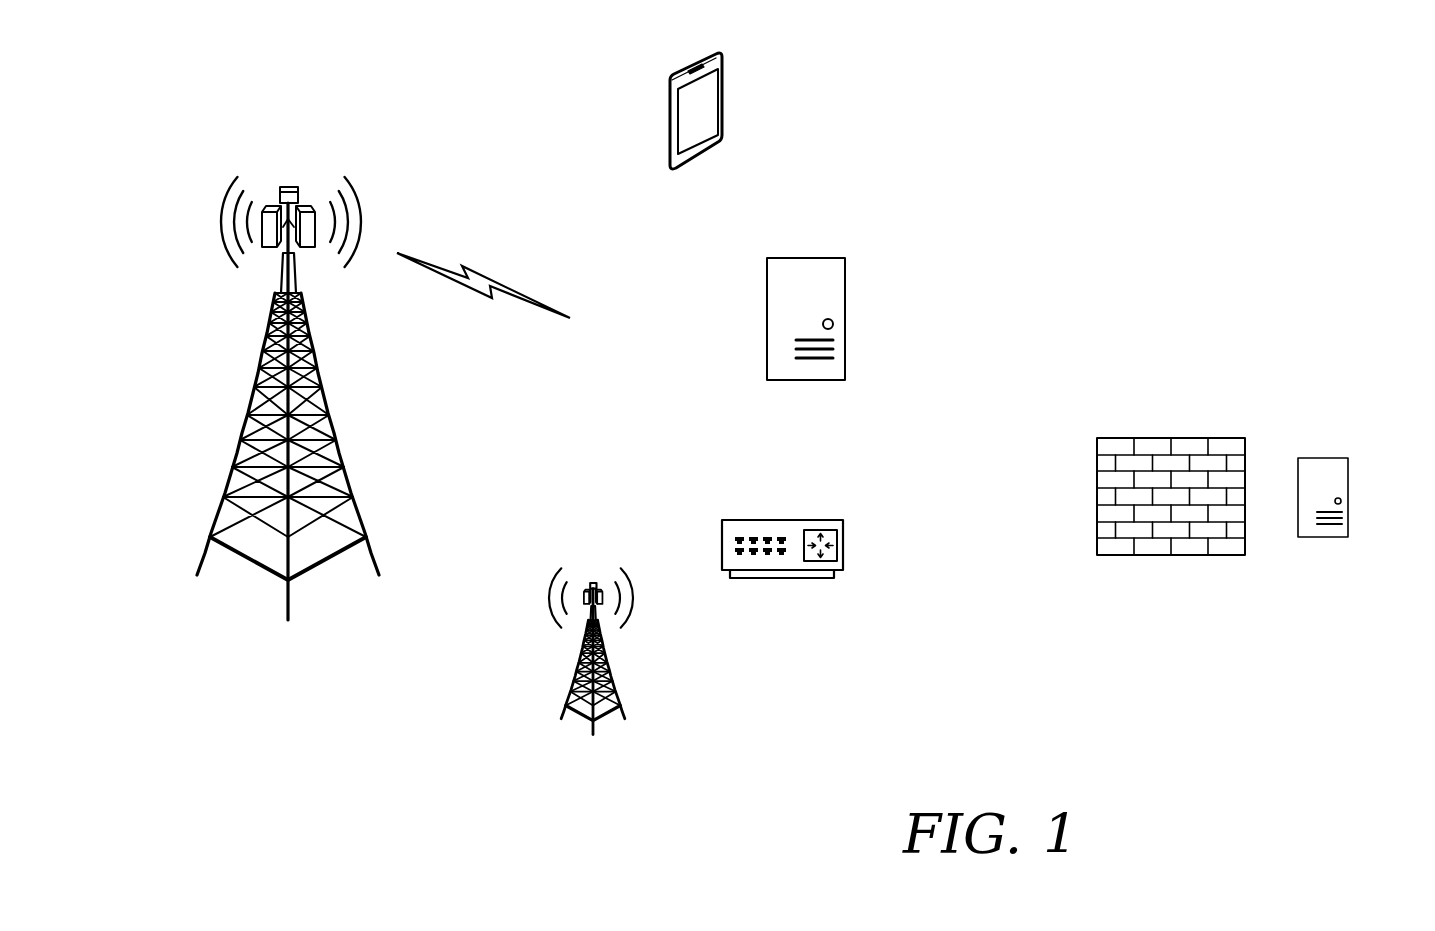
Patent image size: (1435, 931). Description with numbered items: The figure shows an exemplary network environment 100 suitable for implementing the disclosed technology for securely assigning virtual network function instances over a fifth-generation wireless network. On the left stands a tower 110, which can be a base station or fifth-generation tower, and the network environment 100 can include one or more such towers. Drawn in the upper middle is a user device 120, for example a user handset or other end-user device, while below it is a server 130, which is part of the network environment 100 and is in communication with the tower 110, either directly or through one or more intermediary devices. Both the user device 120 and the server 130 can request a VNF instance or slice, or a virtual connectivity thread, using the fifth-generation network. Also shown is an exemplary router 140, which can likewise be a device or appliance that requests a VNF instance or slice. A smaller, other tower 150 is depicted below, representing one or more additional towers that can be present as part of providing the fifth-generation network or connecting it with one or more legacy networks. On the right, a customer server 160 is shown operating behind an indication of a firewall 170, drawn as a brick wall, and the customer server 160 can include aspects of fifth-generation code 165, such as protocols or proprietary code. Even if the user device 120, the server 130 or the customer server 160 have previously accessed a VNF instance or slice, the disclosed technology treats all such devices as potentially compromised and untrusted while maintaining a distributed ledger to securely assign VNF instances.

The network environment 100 is at (140, 130).
The tower 110 is at (336, 445).
The user device 120 is at (716, 52).
The server 130 is at (813, 258).
The router 140 is at (796, 522).
The other tower 150 is at (607, 672).
The customer server 160 is at (1340, 458).
The 5G code 165 is at (1340, 500).
The firewall 170 is at (1152, 442).